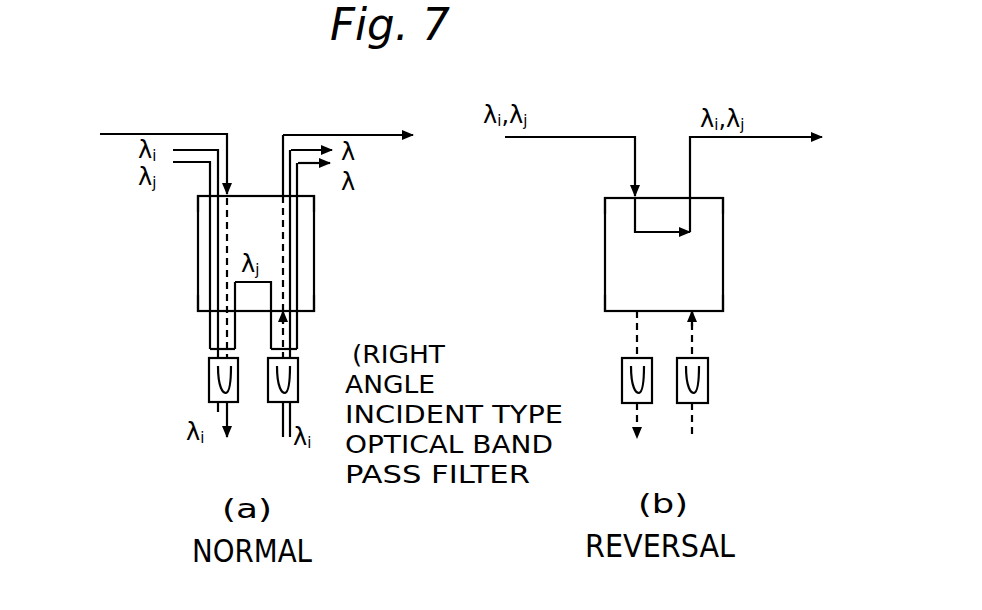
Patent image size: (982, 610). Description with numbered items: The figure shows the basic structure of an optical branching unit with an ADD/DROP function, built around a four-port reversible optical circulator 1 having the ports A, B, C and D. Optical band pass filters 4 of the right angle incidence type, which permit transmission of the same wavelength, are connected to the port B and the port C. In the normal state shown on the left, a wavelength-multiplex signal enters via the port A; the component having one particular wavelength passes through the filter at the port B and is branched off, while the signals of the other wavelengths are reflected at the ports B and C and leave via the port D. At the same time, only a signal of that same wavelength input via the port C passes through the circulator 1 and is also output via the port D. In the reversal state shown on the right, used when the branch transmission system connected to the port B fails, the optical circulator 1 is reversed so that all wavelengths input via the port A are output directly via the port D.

The four-port reversible optical circulator 1 is at (200, 255).
The optical band pass filter 4 is at (209, 380).
The port A is at (400, 191).
The port B is at (399, 313).
The port C is at (525, 313).
The port D is at (523, 191).